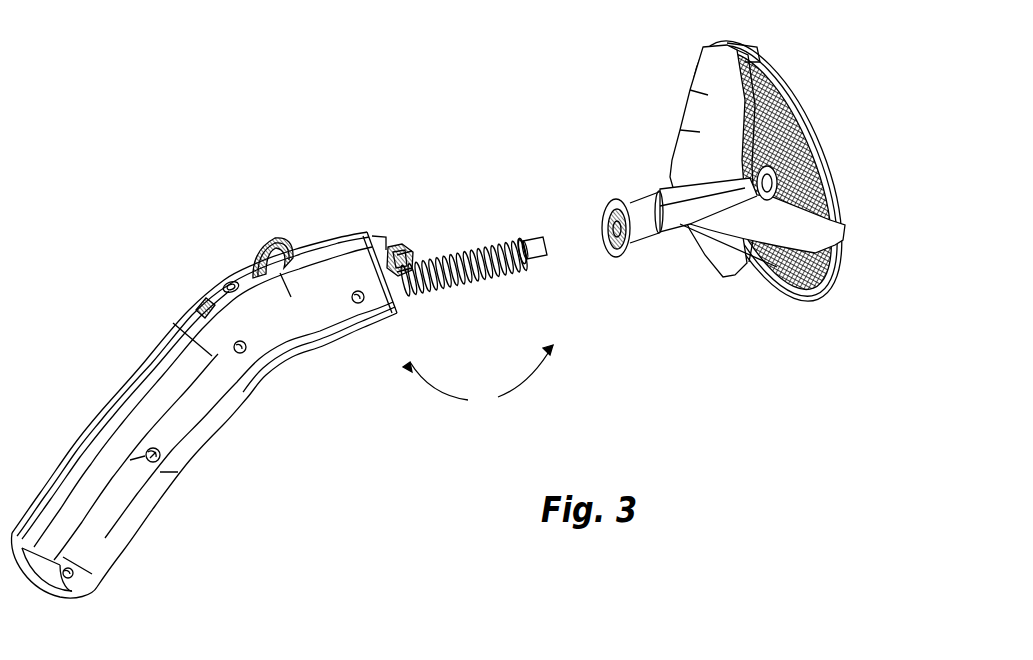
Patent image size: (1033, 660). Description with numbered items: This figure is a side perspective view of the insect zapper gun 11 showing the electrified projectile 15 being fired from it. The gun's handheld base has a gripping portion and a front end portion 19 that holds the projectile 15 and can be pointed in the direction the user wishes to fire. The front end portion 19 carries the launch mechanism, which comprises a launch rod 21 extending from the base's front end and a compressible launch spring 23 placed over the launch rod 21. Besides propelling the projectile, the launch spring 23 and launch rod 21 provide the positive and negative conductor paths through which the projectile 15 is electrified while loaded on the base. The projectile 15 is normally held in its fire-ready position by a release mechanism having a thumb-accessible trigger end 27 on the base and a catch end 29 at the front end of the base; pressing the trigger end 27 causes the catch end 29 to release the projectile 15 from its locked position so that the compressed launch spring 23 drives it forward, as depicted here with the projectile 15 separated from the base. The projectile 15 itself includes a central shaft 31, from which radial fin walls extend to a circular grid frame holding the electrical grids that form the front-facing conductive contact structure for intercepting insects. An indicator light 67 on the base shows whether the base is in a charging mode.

The insect zapper gun 11 is at (282, 415).
The projectile 15 is at (816, 114).
The front end portion 19 is at (389, 246).
The launch rod 21 is at (526, 236).
The compressible launch spring 23 is at (457, 248).
The trigger end 27 is at (270, 238).
The catch end 29 is at (405, 250).
The central shaft 31 is at (658, 192).
The indicator light 67 is at (222, 282).